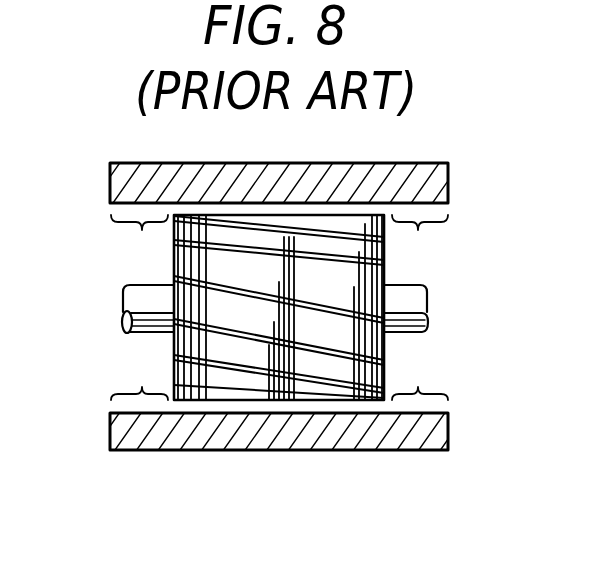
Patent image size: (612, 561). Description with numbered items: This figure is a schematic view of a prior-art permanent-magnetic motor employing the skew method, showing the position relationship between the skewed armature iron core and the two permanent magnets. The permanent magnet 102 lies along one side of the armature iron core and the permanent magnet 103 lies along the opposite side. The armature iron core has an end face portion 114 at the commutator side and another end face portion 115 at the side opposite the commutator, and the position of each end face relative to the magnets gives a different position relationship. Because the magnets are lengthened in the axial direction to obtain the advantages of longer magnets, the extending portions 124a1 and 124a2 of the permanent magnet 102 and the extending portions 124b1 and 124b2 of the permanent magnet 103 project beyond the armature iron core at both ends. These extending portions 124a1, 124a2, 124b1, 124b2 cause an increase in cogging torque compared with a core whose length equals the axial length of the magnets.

The permanent magnet 102 is at (335, 170).
The permanent magnet 103 is at (335, 451).
The end face portion 114 is at (174, 374).
The end face portion 115 is at (386, 372).
The extending portion 124a1 is at (142, 232).
The extending portion 124a2 is at (418, 232).
The extending portion 124b1 is at (140, 389).
The extending portion 124b2 is at (419, 390).